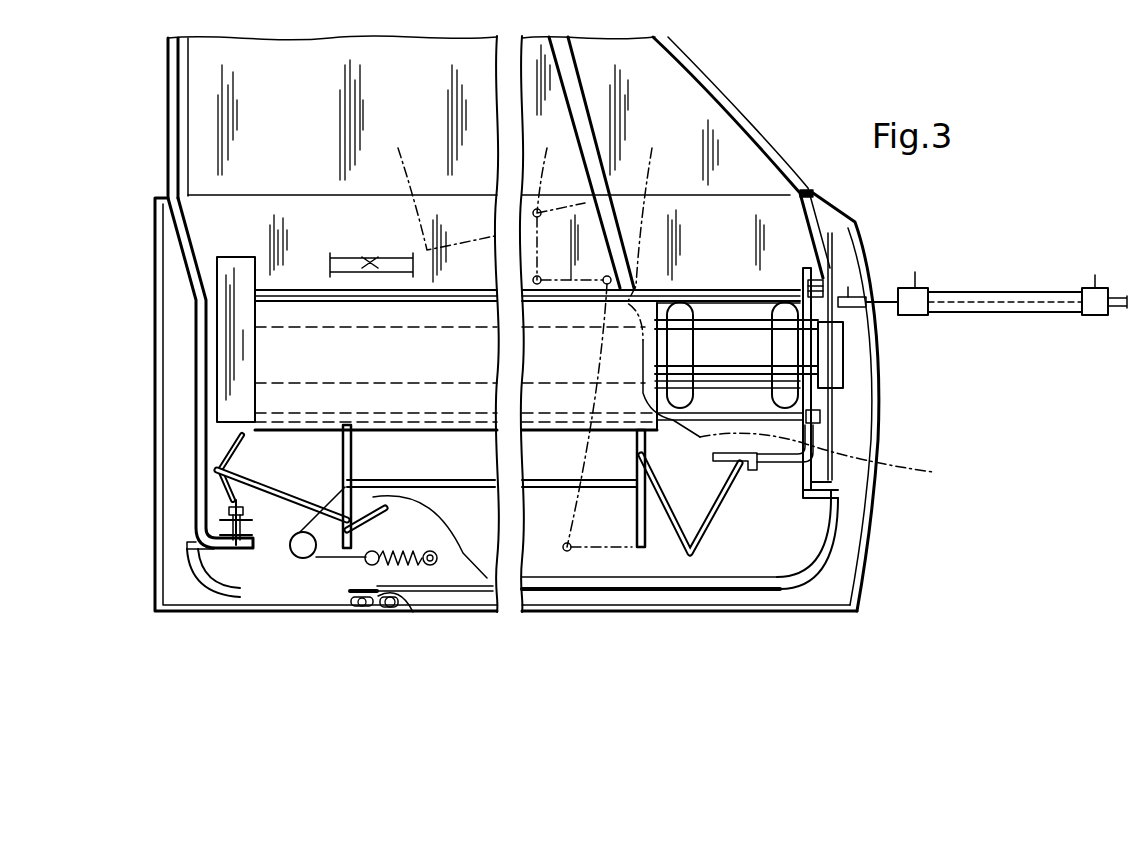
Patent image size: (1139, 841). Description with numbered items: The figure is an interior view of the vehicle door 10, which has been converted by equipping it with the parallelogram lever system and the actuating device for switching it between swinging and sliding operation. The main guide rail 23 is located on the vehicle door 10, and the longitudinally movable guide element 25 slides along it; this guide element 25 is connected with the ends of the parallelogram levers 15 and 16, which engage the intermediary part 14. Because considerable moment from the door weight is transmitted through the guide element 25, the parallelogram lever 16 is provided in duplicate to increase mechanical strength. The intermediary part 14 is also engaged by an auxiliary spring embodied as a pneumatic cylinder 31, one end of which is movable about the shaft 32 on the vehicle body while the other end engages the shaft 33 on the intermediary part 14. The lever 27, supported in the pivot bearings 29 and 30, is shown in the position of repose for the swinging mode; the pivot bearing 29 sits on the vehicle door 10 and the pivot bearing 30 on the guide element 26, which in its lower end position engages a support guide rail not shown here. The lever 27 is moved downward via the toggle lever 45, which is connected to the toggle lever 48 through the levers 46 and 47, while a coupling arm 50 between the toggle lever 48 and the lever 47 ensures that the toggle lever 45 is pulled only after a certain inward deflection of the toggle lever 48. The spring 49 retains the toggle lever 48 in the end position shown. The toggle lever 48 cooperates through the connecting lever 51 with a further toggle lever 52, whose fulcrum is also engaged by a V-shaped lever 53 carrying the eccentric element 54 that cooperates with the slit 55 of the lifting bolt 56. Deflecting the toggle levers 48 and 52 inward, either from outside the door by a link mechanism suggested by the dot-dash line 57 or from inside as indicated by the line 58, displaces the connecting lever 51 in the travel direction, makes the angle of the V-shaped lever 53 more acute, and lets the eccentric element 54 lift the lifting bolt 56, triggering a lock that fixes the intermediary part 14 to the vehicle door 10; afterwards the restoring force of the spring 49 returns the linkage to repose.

The vehicle door 10 is at (832, 587).
The intermediary part 14 is at (830, 333).
The parallelogram lever 15 is at (808, 425).
The parallelogram lever 16 is at (807, 382).
The main guide rail 23 is at (325, 383).
The guide element 25 is at (690, 312).
The guide element 26 is at (385, 607).
The lever 27 is at (205, 576).
The pivot bearing 29 is at (220, 530).
The pivot bearing 30 is at (413, 612).
The pneumatic cylinder 31 is at (1003, 292).
The shaft 32 is at (1120, 290).
The shaft 33 is at (907, 292).
The toggle lever 45 is at (225, 449).
The lever 46 is at (327, 450).
The lever 47 is at (452, 487).
The toggle lever 48 is at (340, 448).
The spring 49 is at (367, 560).
The coupling arm 50 is at (495, 597).
The connecting lever 51 is at (537, 487).
The toggle lever 52 is at (645, 460).
The V-shaped lever 53 is at (707, 467).
The eccentric element 54 is at (765, 465).
The slit 55 is at (752, 480).
The lifting bolt 56 is at (805, 455).
The dot-dash line 57 is at (610, 647).
The line 58 is at (797, 303).